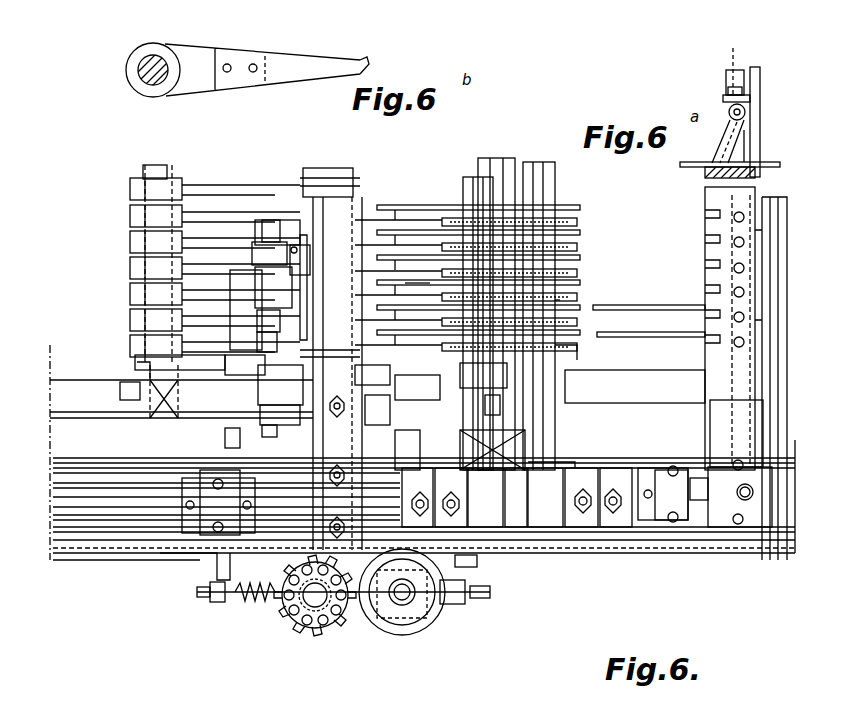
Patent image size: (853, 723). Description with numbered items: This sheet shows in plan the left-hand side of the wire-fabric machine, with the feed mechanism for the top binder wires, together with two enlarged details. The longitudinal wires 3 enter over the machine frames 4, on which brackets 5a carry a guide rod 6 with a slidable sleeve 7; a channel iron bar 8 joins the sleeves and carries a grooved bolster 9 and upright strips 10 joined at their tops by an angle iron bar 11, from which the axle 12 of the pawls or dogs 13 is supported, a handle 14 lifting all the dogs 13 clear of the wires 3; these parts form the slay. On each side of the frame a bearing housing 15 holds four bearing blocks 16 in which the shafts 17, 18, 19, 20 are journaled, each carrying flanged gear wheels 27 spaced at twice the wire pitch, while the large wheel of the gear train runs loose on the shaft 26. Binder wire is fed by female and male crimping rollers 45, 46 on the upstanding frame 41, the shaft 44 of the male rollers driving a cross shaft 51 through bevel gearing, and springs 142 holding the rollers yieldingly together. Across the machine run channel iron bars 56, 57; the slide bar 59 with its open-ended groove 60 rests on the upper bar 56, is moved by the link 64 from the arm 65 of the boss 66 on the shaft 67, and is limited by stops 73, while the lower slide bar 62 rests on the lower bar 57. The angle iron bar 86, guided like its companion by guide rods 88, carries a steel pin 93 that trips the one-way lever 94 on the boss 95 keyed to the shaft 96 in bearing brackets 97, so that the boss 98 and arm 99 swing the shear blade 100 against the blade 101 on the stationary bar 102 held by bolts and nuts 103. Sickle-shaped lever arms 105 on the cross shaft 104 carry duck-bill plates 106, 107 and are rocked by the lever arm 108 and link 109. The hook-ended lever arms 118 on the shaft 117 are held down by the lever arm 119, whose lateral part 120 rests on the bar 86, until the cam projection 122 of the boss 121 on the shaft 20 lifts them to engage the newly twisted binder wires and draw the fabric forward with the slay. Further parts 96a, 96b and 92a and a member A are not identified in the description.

In FIG. 6B, the shaft 117 is at (127, 79).
In FIG. 6, the shaft 117 is at (140, 170).
In FIG. 6B, the lever arms 118 is at (208, 52).
In FIG. 6, the lever arms 118 is at (212, 186).
In FIG. 6A, the handle 14 is at (728, 52).
In FIG. 6A, the angle iron bar 11 is at (722, 98).
In FIG. 6, the angle iron bar 11 is at (700, 195).
In FIG. 6A, the upright metal strips 10 is at (762, 95).
In FIG. 6, the upright metal strips 10 is at (770, 238).
In FIG. 6A, the axle 12 is at (745, 113).
In FIG. 6, the axle 12 is at (750, 390).
In FIG. 6A, the pawls or dogs 13 is at (728, 141).
In FIG. 6, the pawls or dogs 13 is at (705, 262).
In FIG. 6A, the plate or bolster 9 is at (752, 158).
In FIG. 6A, the longitudinal wires 3 is at (700, 162).
In FIG. 6, the longitudinal wires 3 is at (640, 306).
In FIG. 6A, the channel iron bar 8 is at (704, 173).
In FIG. 6, the channel iron bar 8 is at (704, 225).
In FIG. 6, the lower channel iron bar 57 is at (312, 168).
In FIG. 6, the upper channel iron bar 56 is at (312, 447).
In FIG. 6, the slide bar 62 is at (365, 180).
In FIG. 6, the stops 73 is at (300, 225).
In FIG. 6, the shaft 67 is at (258, 232).
In FIG. 6, the arm 65 is at (250, 257).
In FIG. 6, the boss 66 is at (262, 267).
In FIG. 6, the link 64 is at (268, 292).
In FIG. 6, the slide bar 59 is at (480, 555).
In FIG. 6, the open ended groove 60 is at (350, 307).
In FIG. 6, the arm 99 is at (300, 358).
In FIG. 6, the shear blade 100 is at (358, 355).
In FIG. 6, the bearing brackets 97 is at (258, 400).
In FIG. 6, the boss 98 is at (267, 343).
In FIG. 6, the steel pin 93 is at (120, 372).
In FIG. 6, the lever arm 119 is at (180, 357).
In FIG. 6, the one-way trip lever 94 is at (245, 359).
In FIG. 6, the boss 95 is at (280, 385).
In FIG. 6, the angle iron bar 86 is at (108, 428).
In FIG. 6, the lever arm 96b is at (245, 428).
In FIG. 6, the lever arm 96a is at (223, 442).
In FIG. 6, the shaft 96 is at (265, 439).
In FIG. 6, the guide rods 88 is at (128, 490).
In FIG. 6, the bearing A is at (233, 502).
In FIG. 6, the shear blade 101 is at (340, 397).
In FIG. 6, the stationary bar 102 is at (342, 482).
In FIG. 6, the bolts and nuts 103 is at (340, 470).
In FIG. 6, the laterally extending part 120 is at (375, 385).
In FIG. 6, the arm 92a is at (420, 350).
In FIG. 6, the link 109 is at (410, 380).
In FIG. 6, the lever arm 108 is at (480, 400).
In FIG. 6, the boss 121 is at (483, 375).
In FIG. 6, the cam projection 122 is at (574, 357).
In FIG. 6, the cross shaft 51 is at (410, 455).
In FIG. 6, the shaft 17 is at (462, 440).
In FIG. 6, the shaft 20 is at (465, 175).
In FIG. 6, the cross shaft 104 is at (500, 158).
In FIG. 6, the shaft 19 is at (545, 160).
In FIG. 6, the shaft 18 is at (548, 210).
In FIG. 6, the flanged gear wheels 27 is at (580, 247).
In FIG. 6, the sickle shaped lever arms 105 is at (422, 206).
In FIG. 6, the plate 106 is at (408, 195).
In FIG. 6, the plate 107 is at (403, 300).
In FIG. 6, the shaft 26 is at (780, 198).
In FIG. 6, the bearing bracket or housing 15 is at (592, 552).
In FIG. 6, the bearing blocks 16 is at (570, 465).
In FIG. 6, the machine frames 4 is at (645, 460).
In FIG. 6, the guide rod 6 is at (695, 475).
In FIG. 6, the bracket 5a is at (663, 494).
In FIG. 6, the sleeve 7 is at (742, 552).
In FIG. 6, the upstanding frame 41 is at (215, 560).
In FIG. 6, the male crimping rollers 46 is at (295, 565).
In FIG. 6, the female crimping rollers 45 is at (435, 625).
In FIG. 6, the shaft 44 is at (415, 595).
In FIG. 6, the springs 142 is at (265, 605).